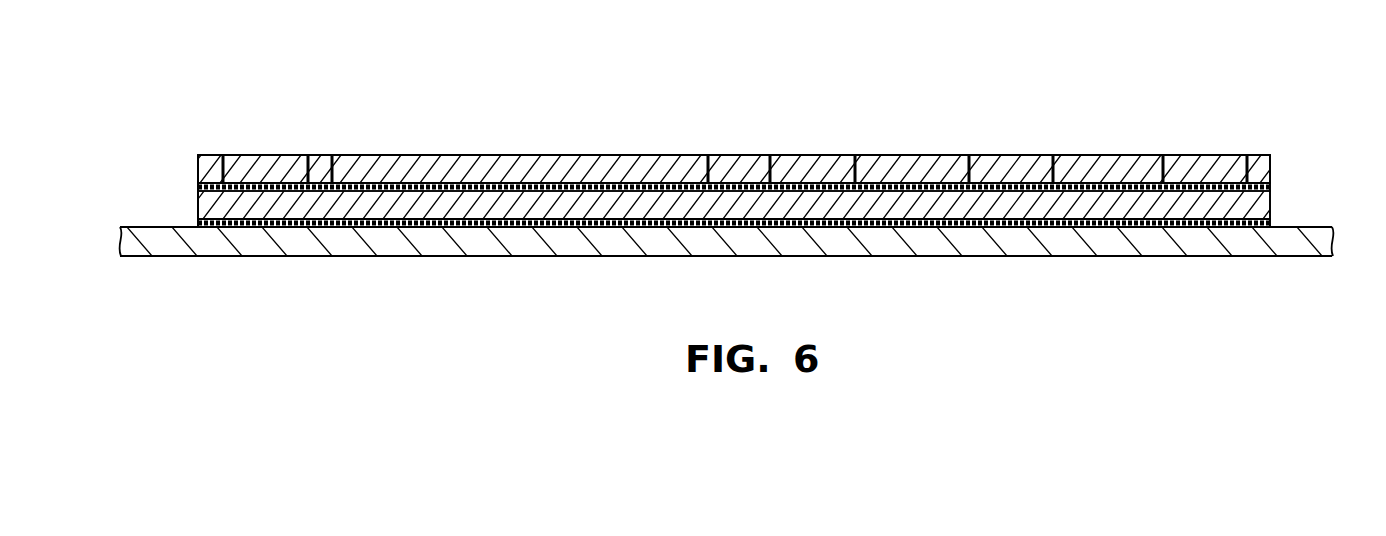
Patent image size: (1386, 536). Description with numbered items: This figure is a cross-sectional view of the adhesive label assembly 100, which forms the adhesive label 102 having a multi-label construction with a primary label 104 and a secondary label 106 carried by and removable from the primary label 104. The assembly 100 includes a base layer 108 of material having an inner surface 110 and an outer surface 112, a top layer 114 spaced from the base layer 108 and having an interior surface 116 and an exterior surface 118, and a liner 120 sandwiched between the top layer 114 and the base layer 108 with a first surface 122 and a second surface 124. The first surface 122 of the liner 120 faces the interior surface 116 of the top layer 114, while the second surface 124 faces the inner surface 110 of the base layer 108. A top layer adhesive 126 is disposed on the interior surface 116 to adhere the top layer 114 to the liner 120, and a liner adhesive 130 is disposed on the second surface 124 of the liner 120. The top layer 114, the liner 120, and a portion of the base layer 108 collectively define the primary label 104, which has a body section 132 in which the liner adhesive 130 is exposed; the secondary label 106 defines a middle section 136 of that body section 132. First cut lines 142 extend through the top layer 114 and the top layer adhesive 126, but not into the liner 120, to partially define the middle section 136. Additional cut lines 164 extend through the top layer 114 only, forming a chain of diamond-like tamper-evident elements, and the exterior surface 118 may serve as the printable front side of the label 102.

The adhesive label assembly 100 is at (1297, 148).
The adhesive label 102 is at (1129, 146).
The primary label 104 is at (1211, 146).
The secondary label 106 is at (388, 146).
The base layer 108 is at (133, 240).
The inner surface 110 is at (457, 210).
The outer surface 112 is at (507, 257).
The top layer 114 is at (204, 171).
The interior surface 116 is at (537, 193).
The exterior surface 118 is at (483, 157).
The liner 120 is at (209, 212).
The first surface 122 is at (878, 185).
The second surface 124 is at (928, 229).
The top layer adhesive 126 is at (1271, 186).
The liner adhesive 130 is at (1271, 222).
The body section 132 is at (832, 160).
The middle section 136 is at (407, 160).
The first cut line 142 is at (340, 168).
The cut lines 164 is at (304, 171).